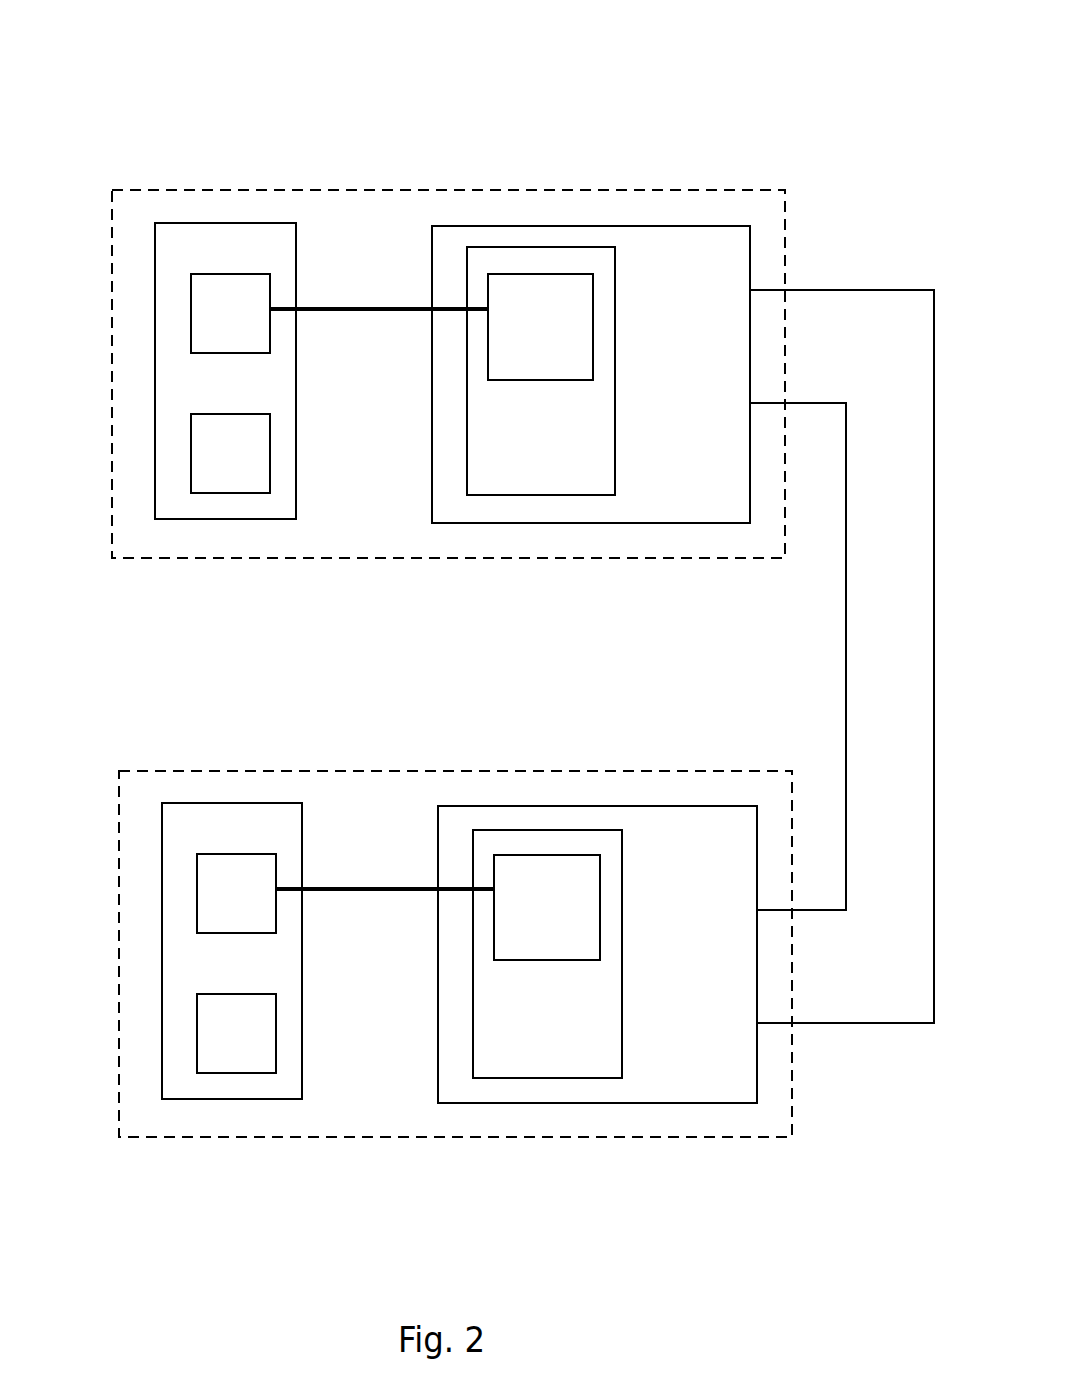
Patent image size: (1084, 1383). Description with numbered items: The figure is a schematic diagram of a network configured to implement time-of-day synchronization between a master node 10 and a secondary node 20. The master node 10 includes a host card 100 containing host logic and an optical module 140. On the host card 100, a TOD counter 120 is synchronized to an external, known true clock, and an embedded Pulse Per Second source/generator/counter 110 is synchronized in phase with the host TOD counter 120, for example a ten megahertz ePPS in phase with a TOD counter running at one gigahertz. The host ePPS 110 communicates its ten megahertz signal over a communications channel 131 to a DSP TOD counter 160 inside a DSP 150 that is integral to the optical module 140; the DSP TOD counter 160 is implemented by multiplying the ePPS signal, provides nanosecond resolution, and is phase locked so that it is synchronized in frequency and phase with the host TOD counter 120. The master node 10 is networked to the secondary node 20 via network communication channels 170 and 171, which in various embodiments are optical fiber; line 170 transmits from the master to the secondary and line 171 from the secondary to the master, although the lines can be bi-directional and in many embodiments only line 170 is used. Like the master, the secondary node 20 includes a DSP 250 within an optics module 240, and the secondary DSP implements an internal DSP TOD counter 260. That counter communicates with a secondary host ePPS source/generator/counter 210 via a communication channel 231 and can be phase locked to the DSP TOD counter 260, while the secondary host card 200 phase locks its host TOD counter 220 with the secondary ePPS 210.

The master node 10 is at (279, 78).
The host card 100 is at (196, 198).
The ePPS signal source/generator/counter 110 is at (209, 307).
The TOD counter 120 is at (209, 476).
The communications channel 131 is at (322, 309).
The optical module 140 is at (681, 205).
The DSP 150 is at (517, 246).
The DSP TOD counter 160 is at (540, 290).
The network line 170 is at (868, 290).
The network line 171 is at (848, 862).
The secondary node 20 is at (659, 1189).
The secondary host card 200 is at (203, 780).
The secondary host ePPS source/generator/counter 210 is at (216, 888).
The host TOD counter 220 is at (216, 1055).
The communication channel 231 is at (323, 889).
The optics module 240 is at (687, 789).
The DSP 250 is at (517, 830).
The DSP TOD counter 260 is at (547, 872).